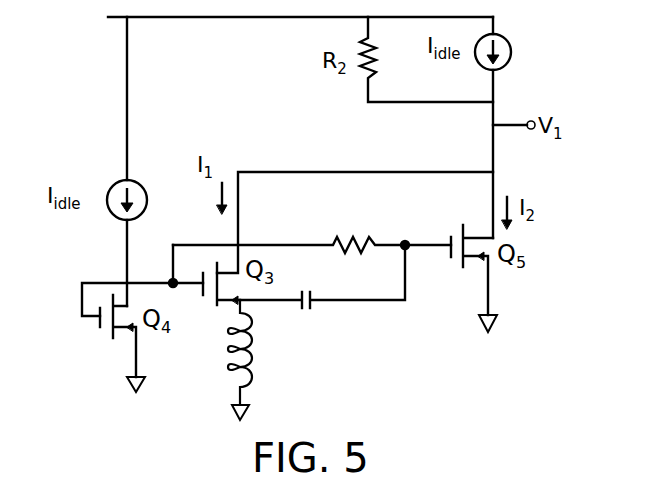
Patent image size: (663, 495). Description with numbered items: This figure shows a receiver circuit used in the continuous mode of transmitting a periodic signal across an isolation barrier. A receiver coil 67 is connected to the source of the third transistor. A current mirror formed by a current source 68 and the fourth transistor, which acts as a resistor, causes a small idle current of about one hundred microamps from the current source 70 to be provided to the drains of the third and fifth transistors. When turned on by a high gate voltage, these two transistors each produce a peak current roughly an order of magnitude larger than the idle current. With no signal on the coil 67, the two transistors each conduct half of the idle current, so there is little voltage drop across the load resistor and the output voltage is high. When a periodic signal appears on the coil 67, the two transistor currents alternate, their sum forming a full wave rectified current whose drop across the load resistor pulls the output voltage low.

The receiver coil 67 is at (257, 342).
The current source 68 is at (132, 181).
The current source 70 is at (511, 43).